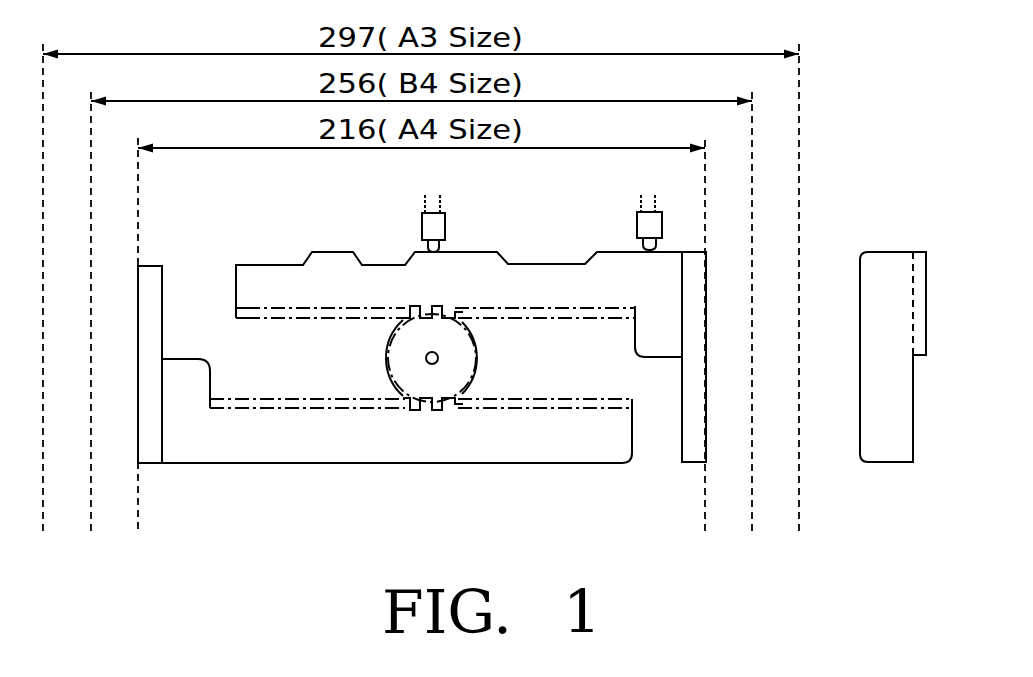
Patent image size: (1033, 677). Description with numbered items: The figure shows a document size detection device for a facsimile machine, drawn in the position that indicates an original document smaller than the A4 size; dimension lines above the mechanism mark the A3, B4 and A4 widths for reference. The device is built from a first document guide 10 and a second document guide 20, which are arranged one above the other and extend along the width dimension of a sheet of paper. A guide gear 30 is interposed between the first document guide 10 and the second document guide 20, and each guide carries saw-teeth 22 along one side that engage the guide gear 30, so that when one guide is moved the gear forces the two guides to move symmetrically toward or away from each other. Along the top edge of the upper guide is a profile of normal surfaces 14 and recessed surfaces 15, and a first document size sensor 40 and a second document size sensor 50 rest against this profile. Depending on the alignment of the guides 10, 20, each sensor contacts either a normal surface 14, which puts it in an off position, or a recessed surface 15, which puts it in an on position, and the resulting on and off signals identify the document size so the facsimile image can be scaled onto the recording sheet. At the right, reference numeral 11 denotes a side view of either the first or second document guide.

The first document guide 10 is at (333, 262).
The side view of document guide 11 is at (897, 253).
The normal surface 14 is at (344, 251).
The recessed surface 15 is at (259, 265).
The second document guide 20 is at (537, 453).
The saw-teeth 22 is at (447, 310).
The guide gear 30 is at (397, 355).
The first document size sensor 40 is at (450, 205).
The second document size sensor 50 is at (674, 208).